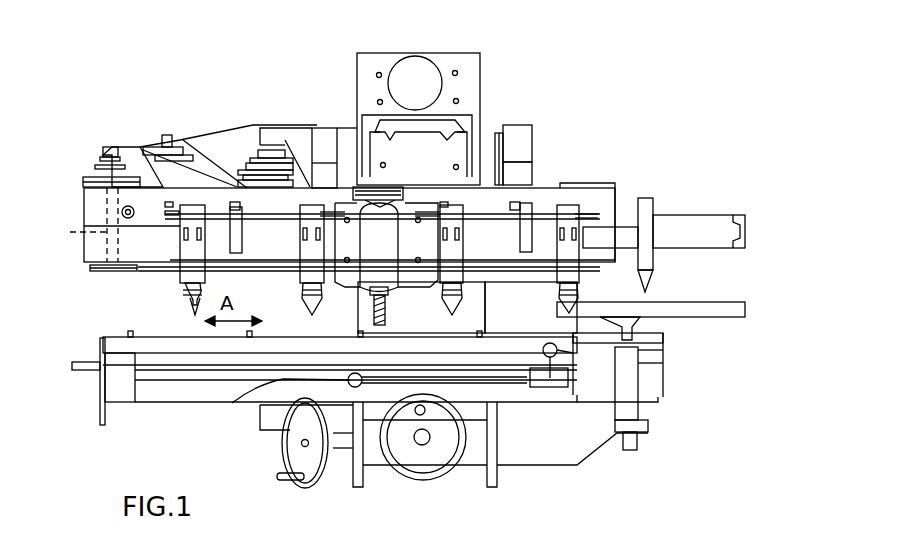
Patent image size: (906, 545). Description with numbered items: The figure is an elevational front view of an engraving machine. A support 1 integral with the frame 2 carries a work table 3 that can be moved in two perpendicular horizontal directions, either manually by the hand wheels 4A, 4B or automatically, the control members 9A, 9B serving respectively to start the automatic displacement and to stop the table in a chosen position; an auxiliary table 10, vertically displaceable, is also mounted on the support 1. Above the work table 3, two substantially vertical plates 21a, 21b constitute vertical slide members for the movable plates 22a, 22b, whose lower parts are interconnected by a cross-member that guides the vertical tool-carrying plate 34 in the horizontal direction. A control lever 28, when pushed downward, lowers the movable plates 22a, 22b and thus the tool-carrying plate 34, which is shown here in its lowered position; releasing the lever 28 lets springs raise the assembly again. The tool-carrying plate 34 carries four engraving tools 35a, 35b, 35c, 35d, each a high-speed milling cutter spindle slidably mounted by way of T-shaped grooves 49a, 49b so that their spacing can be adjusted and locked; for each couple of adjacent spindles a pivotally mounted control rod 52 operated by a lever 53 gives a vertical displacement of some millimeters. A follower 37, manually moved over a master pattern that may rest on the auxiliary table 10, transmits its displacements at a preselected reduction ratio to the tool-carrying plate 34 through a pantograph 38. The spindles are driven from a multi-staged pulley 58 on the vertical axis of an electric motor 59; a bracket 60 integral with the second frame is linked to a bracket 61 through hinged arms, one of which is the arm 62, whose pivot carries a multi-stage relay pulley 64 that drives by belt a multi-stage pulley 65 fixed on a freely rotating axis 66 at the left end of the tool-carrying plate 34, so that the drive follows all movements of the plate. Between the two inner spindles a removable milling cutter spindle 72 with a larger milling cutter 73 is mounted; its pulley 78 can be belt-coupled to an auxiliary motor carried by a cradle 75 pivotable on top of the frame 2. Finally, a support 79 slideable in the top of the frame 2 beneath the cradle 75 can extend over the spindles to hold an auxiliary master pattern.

The support 1 is at (505, 462).
The frame 2 is at (360, 306).
The work table 3 is at (300, 333).
The hand wheel 4A is at (392, 455).
The hand wheel 4B is at (98, 412).
The control member 9A is at (577, 358).
The control member 9B is at (238, 400).
The auxiliary table 10 is at (732, 300).
The vertical plate 21a is at (523, 148).
The vertical plate 21b is at (328, 126).
The movable plate 22a is at (523, 175).
The movable plate 22b is at (325, 172).
The control lever 28 is at (494, 160).
The tool-carrying plate 34 is at (592, 190).
The engraving tool 35a is at (178, 278).
The engraving tool 35b is at (298, 272).
The engraving tool 35c is at (470, 268).
The engraving tool 35d is at (582, 266).
The follower 37 is at (672, 262).
The pantograph 38 is at (712, 228).
The T-shaped groove 49a is at (175, 225).
The T-shaped groove 49b is at (545, 272).
The control rod 52 is at (240, 208).
The lever 53 is at (236, 236).
The multi-staged pulley 58 is at (255, 160).
The electric motor 59 is at (245, 183).
The bracket 60 is at (290, 138).
The bracket 61 is at (172, 180).
The arm 62 is at (210, 140).
The multi-stage relay pulley 64 is at (178, 145).
The multi-stage pulley 65 is at (103, 160).
The axis 66 is at (100, 232).
The milling cutter spindle 72 is at (392, 252).
The milling cutter 73 is at (388, 306).
The cradle 75 is at (375, 58).
The pulley 78 is at (387, 186).
The support 79 is at (432, 130).